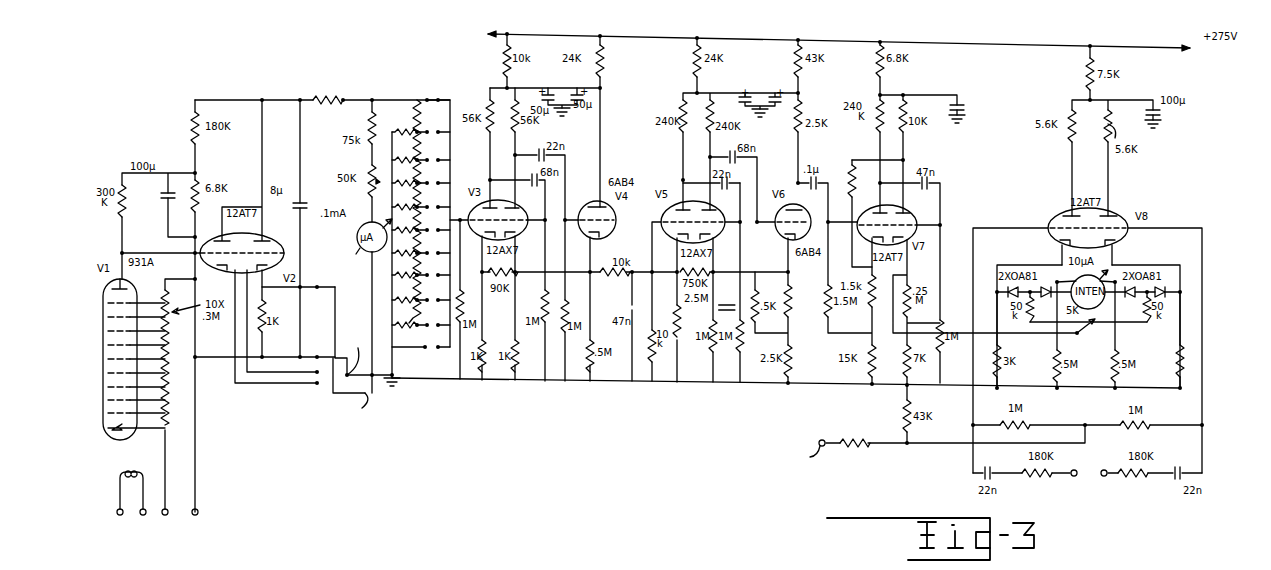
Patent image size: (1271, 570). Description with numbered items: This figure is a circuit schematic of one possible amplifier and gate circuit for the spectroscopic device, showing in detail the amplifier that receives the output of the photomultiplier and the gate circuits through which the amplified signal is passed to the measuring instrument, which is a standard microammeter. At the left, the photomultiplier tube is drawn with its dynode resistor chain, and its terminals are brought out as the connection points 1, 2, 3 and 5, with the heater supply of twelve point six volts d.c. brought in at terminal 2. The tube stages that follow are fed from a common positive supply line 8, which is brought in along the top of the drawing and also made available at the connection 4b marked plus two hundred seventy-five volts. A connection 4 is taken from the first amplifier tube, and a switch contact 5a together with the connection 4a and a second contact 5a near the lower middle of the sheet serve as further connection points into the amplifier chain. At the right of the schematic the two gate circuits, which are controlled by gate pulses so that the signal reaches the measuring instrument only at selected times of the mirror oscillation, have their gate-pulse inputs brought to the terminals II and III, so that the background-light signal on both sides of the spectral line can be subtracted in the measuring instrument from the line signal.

The input terminal 1 is at (120, 521).
The terminal 2 is at (240, 457).
The terminal 3 is at (259, 450).
The terminal 4 is at (298, 293).
The terminal 5 is at (223, 439).
The terminal 4a is at (359, 407).
The terminal 4b (+275V supply) 4b is at (1193, 55).
The switch terminal 5a is at (626, 403).
The supply line 8 is at (750, 70).
The output terminal II is at (1071, 483).
The output terminal III is at (1101, 483).